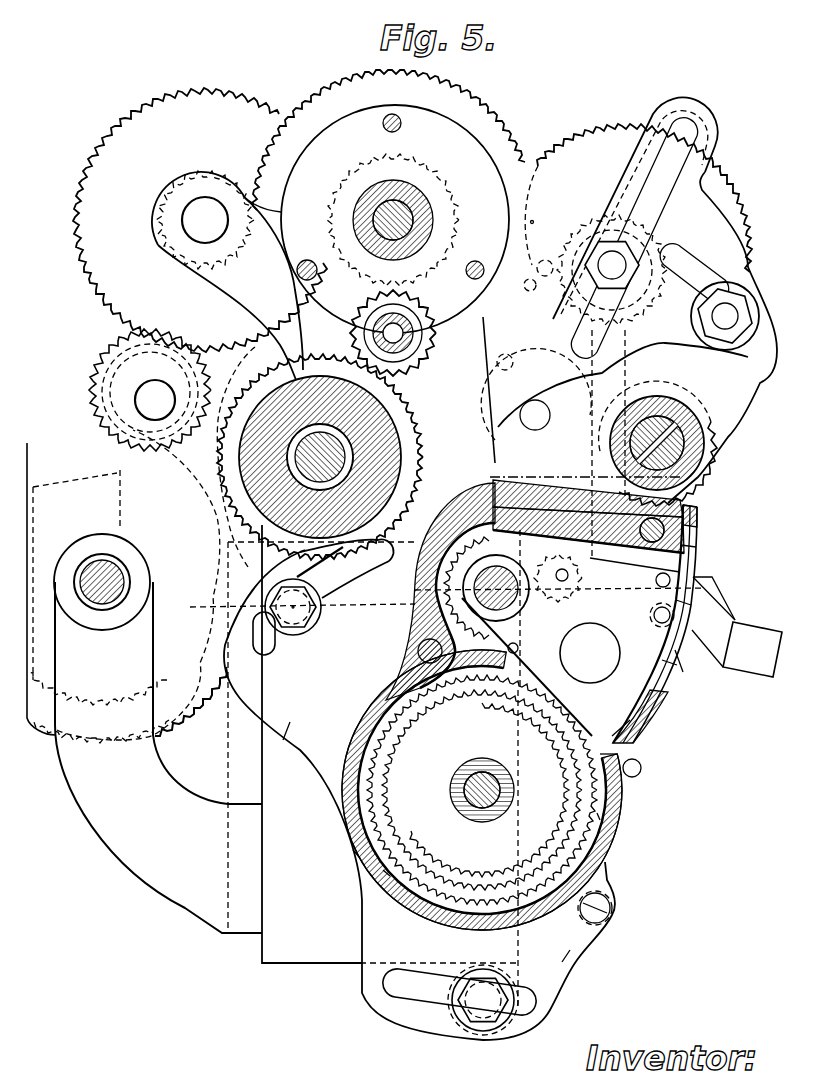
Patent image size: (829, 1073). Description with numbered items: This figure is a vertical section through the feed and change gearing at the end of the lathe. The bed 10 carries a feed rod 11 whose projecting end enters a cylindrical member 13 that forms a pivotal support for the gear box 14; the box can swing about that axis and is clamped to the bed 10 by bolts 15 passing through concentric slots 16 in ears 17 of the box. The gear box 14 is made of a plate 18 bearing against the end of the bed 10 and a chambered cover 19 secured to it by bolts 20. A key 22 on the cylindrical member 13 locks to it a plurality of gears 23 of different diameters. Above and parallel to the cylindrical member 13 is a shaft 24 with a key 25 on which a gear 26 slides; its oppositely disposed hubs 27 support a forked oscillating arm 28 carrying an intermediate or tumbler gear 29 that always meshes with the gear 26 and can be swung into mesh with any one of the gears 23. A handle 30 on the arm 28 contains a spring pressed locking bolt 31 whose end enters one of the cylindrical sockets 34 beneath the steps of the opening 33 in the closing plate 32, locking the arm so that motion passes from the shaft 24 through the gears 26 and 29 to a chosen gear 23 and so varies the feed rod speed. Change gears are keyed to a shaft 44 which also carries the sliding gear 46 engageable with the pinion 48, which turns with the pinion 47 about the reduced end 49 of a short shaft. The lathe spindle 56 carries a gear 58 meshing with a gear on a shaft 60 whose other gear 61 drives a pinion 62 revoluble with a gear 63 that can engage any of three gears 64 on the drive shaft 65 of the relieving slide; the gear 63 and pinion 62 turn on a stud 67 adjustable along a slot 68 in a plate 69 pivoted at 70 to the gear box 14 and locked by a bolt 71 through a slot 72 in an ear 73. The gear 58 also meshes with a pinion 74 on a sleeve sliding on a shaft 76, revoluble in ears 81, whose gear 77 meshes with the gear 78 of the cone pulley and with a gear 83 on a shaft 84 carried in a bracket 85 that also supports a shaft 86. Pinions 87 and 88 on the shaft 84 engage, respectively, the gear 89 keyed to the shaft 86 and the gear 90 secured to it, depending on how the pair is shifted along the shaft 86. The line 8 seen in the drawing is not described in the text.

The center line / axis 8 is at (480, 595).
The bed 10 is at (297, 953).
The feed rod 11 is at (413, 760).
The cylindrical member 13 is at (413, 787).
The gear box 14 is at (385, 680).
The bolts 15 is at (300, 627).
The concentric slots 16 is at (341, 578).
The ears 17 is at (283, 740).
The plate 18 is at (383, 870).
The chambered cover 19 is at (353, 850).
The bolts 20 is at (666, 526).
The key 22 is at (483, 760).
The gears 23 is at (593, 837).
The shaft 24 is at (478, 565).
The key 25 is at (560, 605).
The gear 26 is at (413, 594).
The hubs 27 is at (377, 558).
The forked oscillating arm 28 is at (703, 577).
The intermediate or tumbler gear 29 is at (670, 705).
The handle 30 is at (745, 628).
The spring pressed locking bolt 31 is at (700, 640).
The closing plate 32 is at (656, 622).
The opening 33 is at (703, 600).
The cylindrical socket 34 is at (679, 668).
The shaft 44 is at (322, 457).
The gear 46 is at (401, 403).
The pinion 47 is at (414, 308).
The pinion 48 is at (428, 322).
The reduced end 49 is at (362, 315).
The lathe spindle 56 is at (414, 191).
The gear 58 is at (481, 97).
The shaft 60 is at (543, 262).
The gear 61 is at (521, 355).
The pinion 62 is at (589, 243).
The gear 63 is at (586, 131).
The gears 64 is at (701, 442).
The drive shaft 65 is at (713, 470).
The stud 67 is at (622, 250).
The slot 68 is at (688, 124).
The plate 69 is at (683, 214).
The pivot 70 is at (523, 412).
The bolt 71 is at (736, 305).
The slot 72 is at (703, 267).
The ear 73 is at (740, 433).
The pinion 74 is at (190, 178).
The shaft 76 is at (198, 220).
The gear 77 is at (233, 93).
The gear 78 is at (401, 128).
The ears 81 is at (232, 272).
The gear 83 is at (110, 360).
The shaft 84 is at (150, 388).
The bracket 85 is at (213, 720).
The shaft 86 is at (127, 577).
The pinion 87 is at (117, 397).
The pinion 88 is at (221, 369).
The gear 89 is at (63, 437).
The gear 90 is at (56, 474).